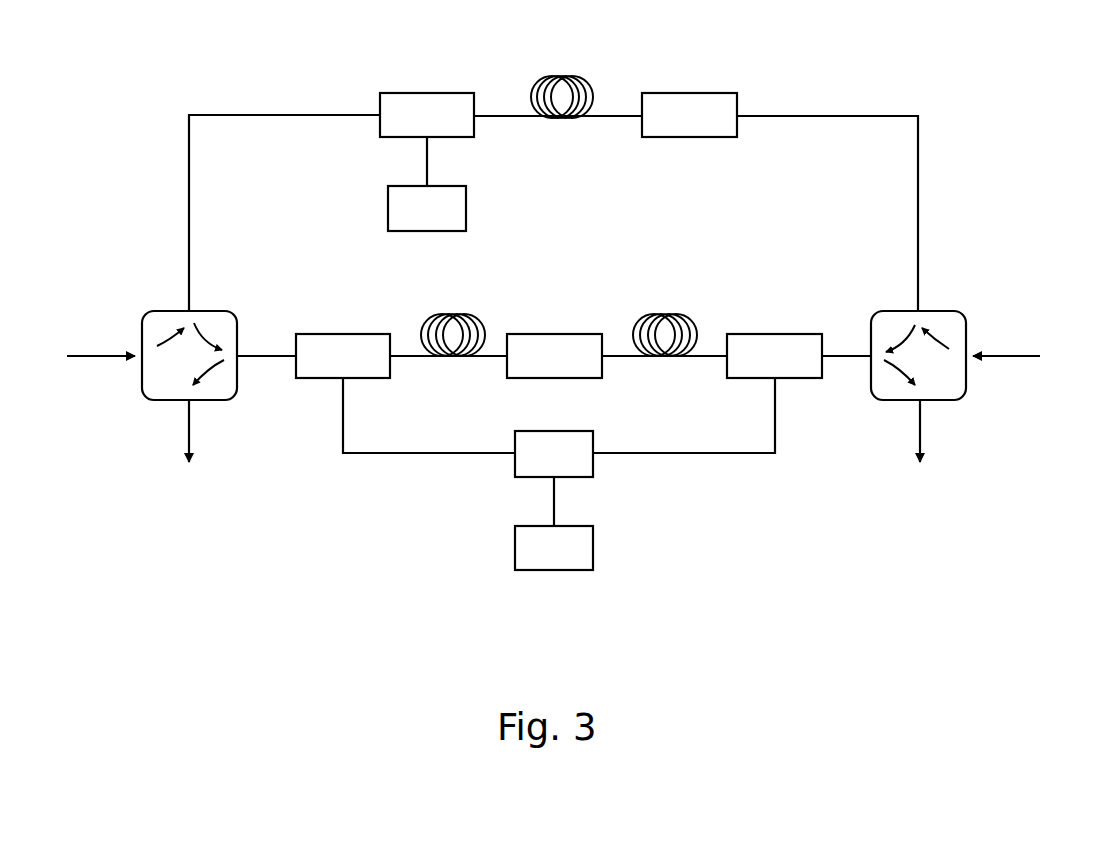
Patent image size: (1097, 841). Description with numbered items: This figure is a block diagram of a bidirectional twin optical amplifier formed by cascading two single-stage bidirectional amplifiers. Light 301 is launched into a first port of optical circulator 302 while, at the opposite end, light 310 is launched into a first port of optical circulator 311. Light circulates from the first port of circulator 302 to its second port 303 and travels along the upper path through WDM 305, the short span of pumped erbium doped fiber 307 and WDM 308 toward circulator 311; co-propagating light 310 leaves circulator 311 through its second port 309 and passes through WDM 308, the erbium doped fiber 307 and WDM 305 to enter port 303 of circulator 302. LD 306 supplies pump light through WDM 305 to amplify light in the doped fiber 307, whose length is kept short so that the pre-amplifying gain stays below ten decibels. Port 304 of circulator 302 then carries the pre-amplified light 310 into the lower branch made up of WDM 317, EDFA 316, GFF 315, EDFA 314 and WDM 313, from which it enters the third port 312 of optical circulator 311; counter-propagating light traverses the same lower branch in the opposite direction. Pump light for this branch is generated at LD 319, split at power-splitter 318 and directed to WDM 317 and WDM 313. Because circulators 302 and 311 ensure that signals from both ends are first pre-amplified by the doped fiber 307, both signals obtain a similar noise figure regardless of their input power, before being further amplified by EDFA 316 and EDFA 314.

The light 301 is at (97, 357).
The optical circulator 302 is at (223, 383).
The port 2 of circulator 302 303 is at (186, 308).
The port 3 of circulator 302 304 is at (242, 352).
The WDM 305 is at (433, 90).
The LD 306 is at (466, 202).
The erbium doped fiber 307 is at (565, 75).
The WDM 308 is at (700, 93).
The port 2 of circulator 311 309 is at (918, 306).
The light 310 is at (973, 360).
The optical circulator 311 is at (943, 388).
The circulator port to amplifier chain 312 is at (866, 358).
The WDM 313 is at (768, 333).
The EDFA 314 is at (672, 313).
The GFF 315 is at (549, 333).
The EDFA 316 is at (447, 357).
The WDM 317 is at (358, 332).
The power-splitter 318 is at (515, 462).
The LD 319 is at (593, 548).